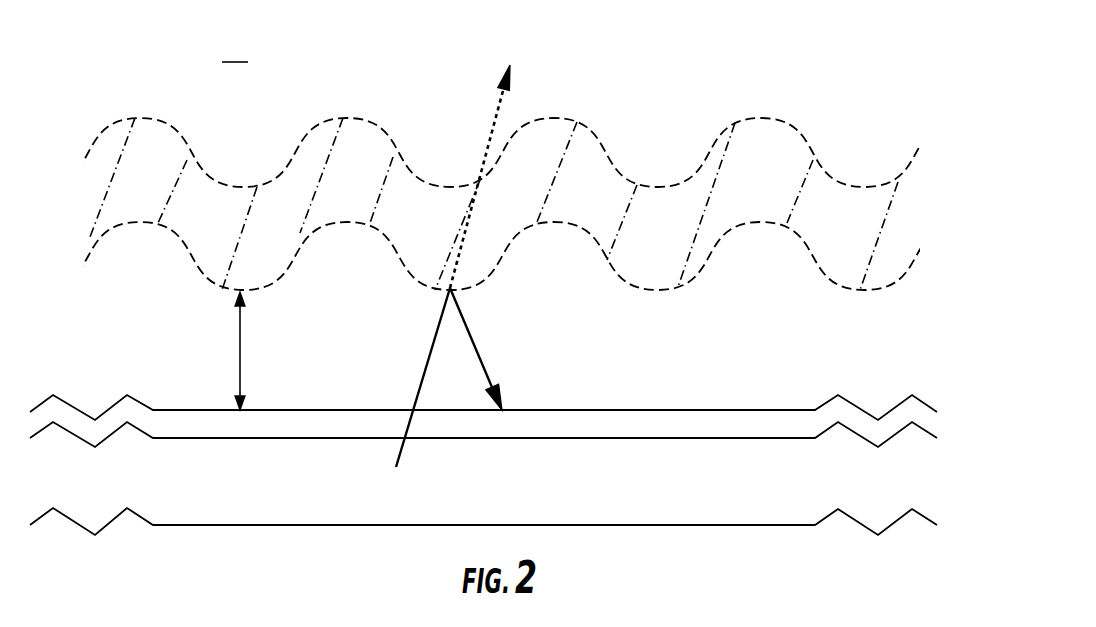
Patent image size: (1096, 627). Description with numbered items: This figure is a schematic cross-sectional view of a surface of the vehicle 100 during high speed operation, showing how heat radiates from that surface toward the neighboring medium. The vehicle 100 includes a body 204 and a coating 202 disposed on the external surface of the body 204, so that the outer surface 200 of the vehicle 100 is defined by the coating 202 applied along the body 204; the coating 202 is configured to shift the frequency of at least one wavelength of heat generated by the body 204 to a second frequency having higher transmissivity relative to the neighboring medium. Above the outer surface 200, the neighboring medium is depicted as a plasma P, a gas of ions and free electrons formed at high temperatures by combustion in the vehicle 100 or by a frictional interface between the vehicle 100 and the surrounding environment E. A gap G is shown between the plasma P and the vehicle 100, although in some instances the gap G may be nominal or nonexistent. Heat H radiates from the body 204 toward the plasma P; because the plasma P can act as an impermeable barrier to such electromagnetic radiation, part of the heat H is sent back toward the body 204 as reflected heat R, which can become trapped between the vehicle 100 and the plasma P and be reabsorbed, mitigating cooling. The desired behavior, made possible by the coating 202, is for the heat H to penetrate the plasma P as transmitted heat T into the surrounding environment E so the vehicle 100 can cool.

The vehicle 100 is at (483, 459).
The outer surface 200 is at (352, 405).
The coating 202 is at (697, 423).
The body 204 is at (693, 498).
The plasma P is at (773, 133).
The surrounding environment E is at (235, 46).
The transmitted heat T is at (488, 147).
The reflected heat R is at (483, 367).
The heat H is at (428, 352).
The gap G is at (240, 352).